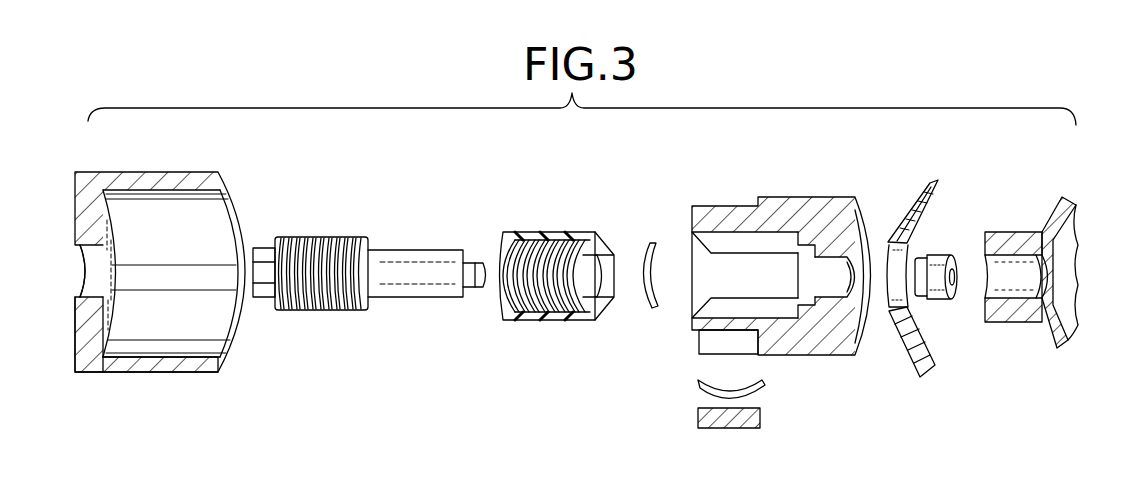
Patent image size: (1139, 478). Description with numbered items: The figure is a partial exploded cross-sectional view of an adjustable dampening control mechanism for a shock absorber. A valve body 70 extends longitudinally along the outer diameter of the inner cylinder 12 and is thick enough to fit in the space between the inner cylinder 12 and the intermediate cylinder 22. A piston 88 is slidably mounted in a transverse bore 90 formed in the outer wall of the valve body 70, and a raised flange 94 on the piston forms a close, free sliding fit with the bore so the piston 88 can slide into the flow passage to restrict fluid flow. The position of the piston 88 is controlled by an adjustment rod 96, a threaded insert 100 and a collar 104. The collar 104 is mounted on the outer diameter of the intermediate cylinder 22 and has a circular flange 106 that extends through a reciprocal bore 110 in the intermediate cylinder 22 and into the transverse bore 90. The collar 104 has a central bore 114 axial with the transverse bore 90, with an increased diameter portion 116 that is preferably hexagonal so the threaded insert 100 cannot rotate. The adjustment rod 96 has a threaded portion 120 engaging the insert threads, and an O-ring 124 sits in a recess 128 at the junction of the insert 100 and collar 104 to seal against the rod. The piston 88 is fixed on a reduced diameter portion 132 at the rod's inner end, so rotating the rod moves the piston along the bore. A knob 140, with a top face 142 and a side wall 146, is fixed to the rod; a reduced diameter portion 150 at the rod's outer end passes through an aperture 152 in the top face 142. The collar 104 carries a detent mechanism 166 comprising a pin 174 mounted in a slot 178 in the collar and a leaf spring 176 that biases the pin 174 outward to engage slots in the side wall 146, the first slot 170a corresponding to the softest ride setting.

The inner cylinder 12 is at (1060, 348).
The intermediate cylinder 22 is at (910, 200).
The valve body 70 is at (1012, 272).
The piston 88 is at (952, 255).
The transverse bore 90 is at (1022, 232).
The raised flange 94 is at (935, 297).
The adjustment rod 96 is at (391, 223).
The threaded insert 100 is at (550, 213).
The collar 104 is at (745, 182).
The circular flange 106 is at (868, 308).
The reciprocal bore 110 is at (944, 300).
The central bore 114 is at (843, 290).
The increased diameter portion 116 is at (716, 306).
The threaded portion 120 is at (325, 307).
The O-ring 124 is at (641, 248).
The recess 128 is at (808, 256).
The reduced diameter portion 132 is at (481, 290).
The knob 140 is at (186, 157).
The top face 142 is at (82, 335).
The side wall 146 is at (173, 367).
The reduced diameter portion 150 is at (265, 245).
The aperture 152 is at (77, 263).
The detent mechanism 166 is at (665, 412).
The first slot 170a is at (345, 476).
The pin 174 is at (758, 420).
The spring 176 is at (764, 384).
The slot 178 is at (718, 340).